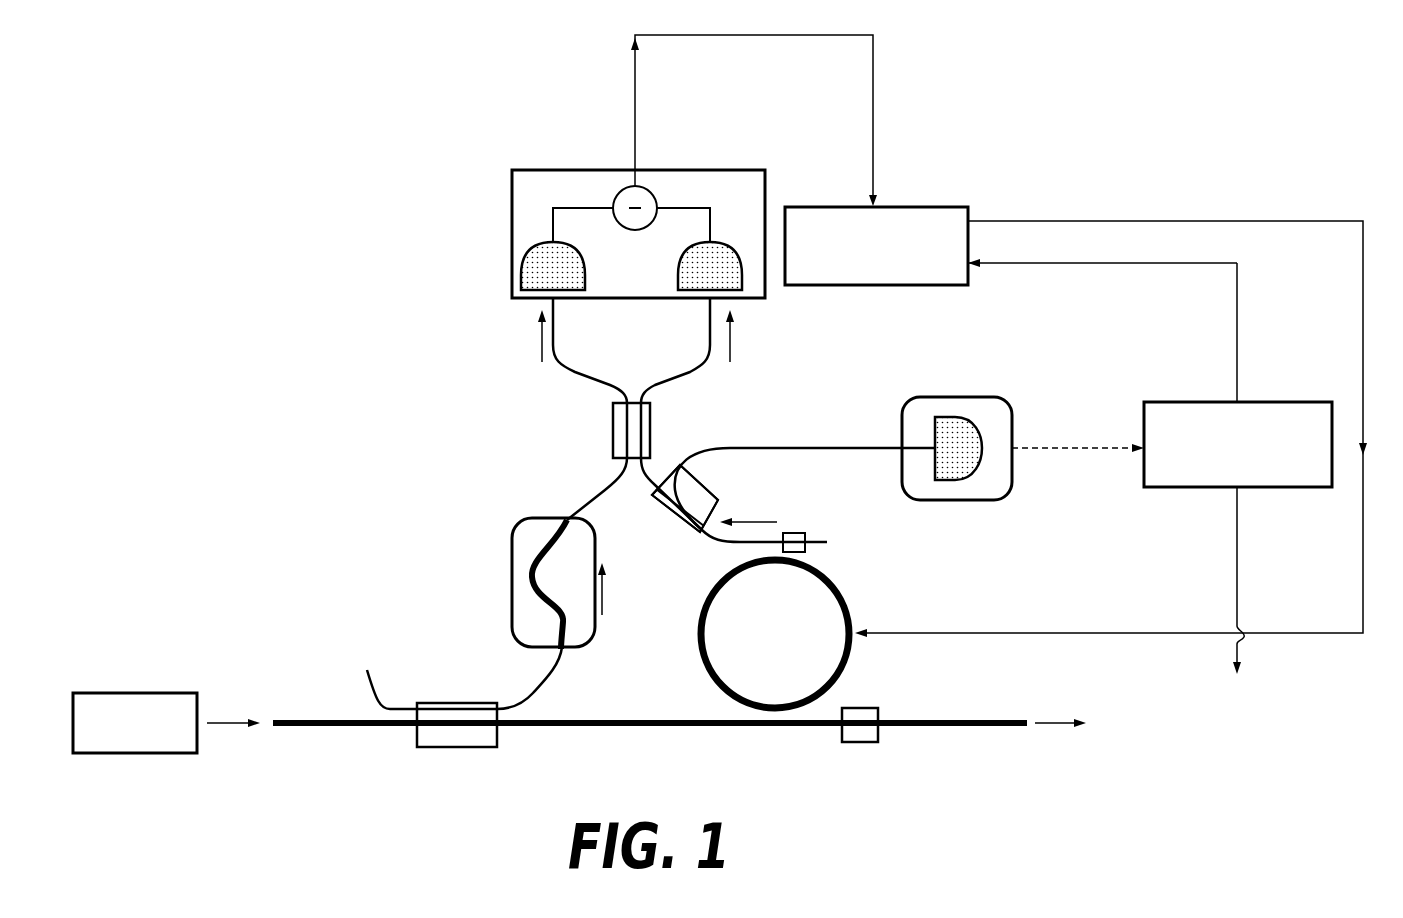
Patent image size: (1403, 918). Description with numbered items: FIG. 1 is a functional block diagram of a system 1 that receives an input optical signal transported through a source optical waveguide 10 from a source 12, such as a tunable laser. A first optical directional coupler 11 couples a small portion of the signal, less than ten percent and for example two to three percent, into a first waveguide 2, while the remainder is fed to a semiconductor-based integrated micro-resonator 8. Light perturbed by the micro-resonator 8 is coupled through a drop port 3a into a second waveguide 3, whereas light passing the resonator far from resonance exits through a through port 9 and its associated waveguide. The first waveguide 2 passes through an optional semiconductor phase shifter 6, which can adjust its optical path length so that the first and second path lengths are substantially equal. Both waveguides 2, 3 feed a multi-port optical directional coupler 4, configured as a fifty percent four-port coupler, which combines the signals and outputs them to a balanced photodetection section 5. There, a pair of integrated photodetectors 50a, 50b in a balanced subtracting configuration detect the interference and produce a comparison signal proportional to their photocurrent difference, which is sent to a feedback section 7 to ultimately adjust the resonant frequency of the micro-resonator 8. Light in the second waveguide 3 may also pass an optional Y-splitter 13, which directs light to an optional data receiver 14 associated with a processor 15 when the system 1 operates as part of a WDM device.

The system 1 is at (263, 140).
The first waveguide 2 is at (567, 512).
The second waveguide 3 is at (652, 495).
The drop port 3a is at (800, 535).
The multi-port optical directional coupler 4 is at (613, 432).
The balanced photodetection section 5 is at (512, 270).
The phase shifter 6 is at (512, 575).
The feedback section 7 is at (927, 207).
The micro-resonator 8 is at (700, 663).
The through port 9 is at (864, 745).
The source optical waveguide 10 is at (315, 727).
The first optical directional coupler 11 is at (452, 703).
The source 12 is at (138, 693).
The Y-splitter 13 is at (680, 465).
The data receiver 14 is at (1013, 460).
The processor 15 is at (1170, 402).
The integrated photodetector 50a is at (530, 255).
The integrated photodetector 50b is at (722, 245).